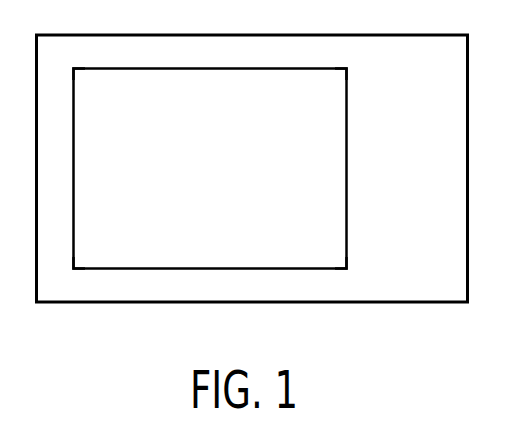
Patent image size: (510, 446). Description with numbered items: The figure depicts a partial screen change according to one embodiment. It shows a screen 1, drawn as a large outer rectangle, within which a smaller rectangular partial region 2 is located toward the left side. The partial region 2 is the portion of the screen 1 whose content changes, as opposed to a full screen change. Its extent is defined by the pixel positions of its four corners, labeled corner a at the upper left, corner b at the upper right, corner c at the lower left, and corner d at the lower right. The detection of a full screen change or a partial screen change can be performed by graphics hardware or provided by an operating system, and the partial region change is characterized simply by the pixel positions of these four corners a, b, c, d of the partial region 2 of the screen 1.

The screen 1 is at (252, 168).
The partial region 2 is at (210, 169).
The corner a is at (70, 65).
The corner b is at (349, 65).
The corner c is at (71, 271).
The corner d is at (350, 270).